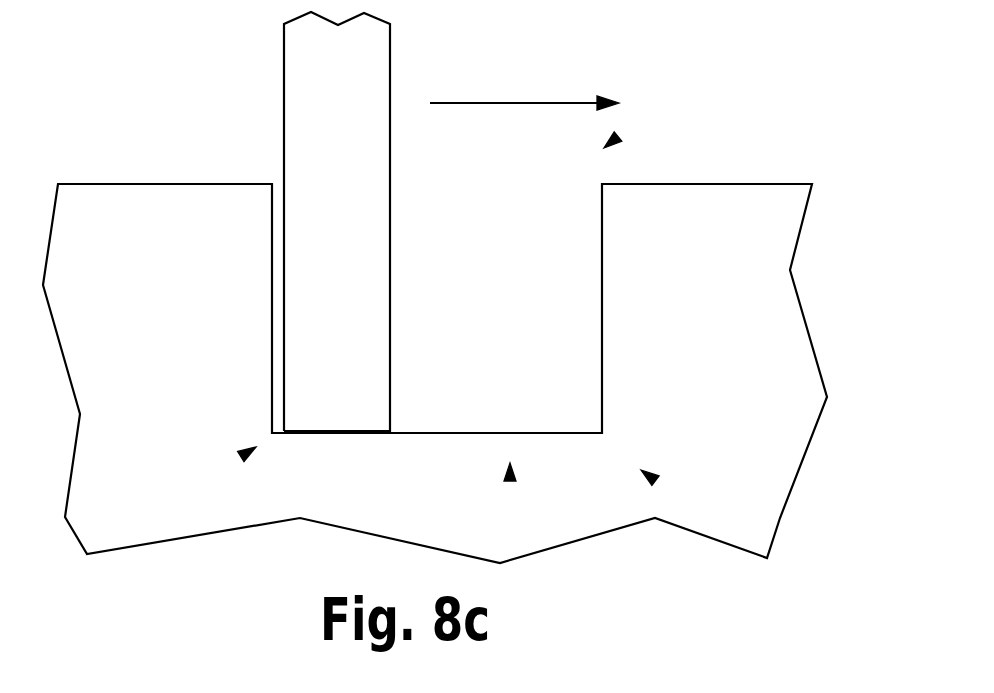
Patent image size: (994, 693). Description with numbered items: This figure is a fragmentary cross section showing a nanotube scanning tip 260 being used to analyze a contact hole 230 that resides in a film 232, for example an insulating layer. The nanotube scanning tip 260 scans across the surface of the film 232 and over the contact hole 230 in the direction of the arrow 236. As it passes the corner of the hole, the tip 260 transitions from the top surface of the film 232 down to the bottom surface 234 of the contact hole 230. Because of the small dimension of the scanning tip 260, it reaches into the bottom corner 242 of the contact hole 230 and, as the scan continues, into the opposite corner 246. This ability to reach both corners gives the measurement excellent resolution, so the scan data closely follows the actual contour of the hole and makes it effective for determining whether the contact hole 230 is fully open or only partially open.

The contact hole 230 is at (614, 139).
The film 232 is at (798, 298).
The bottom surface 234 is at (512, 481).
The arrow 236 is at (494, 103).
The bottom corner 242 is at (241, 457).
The opposite corner 246 is at (654, 481).
The nanotube scanning tip 260 is at (284, 60).